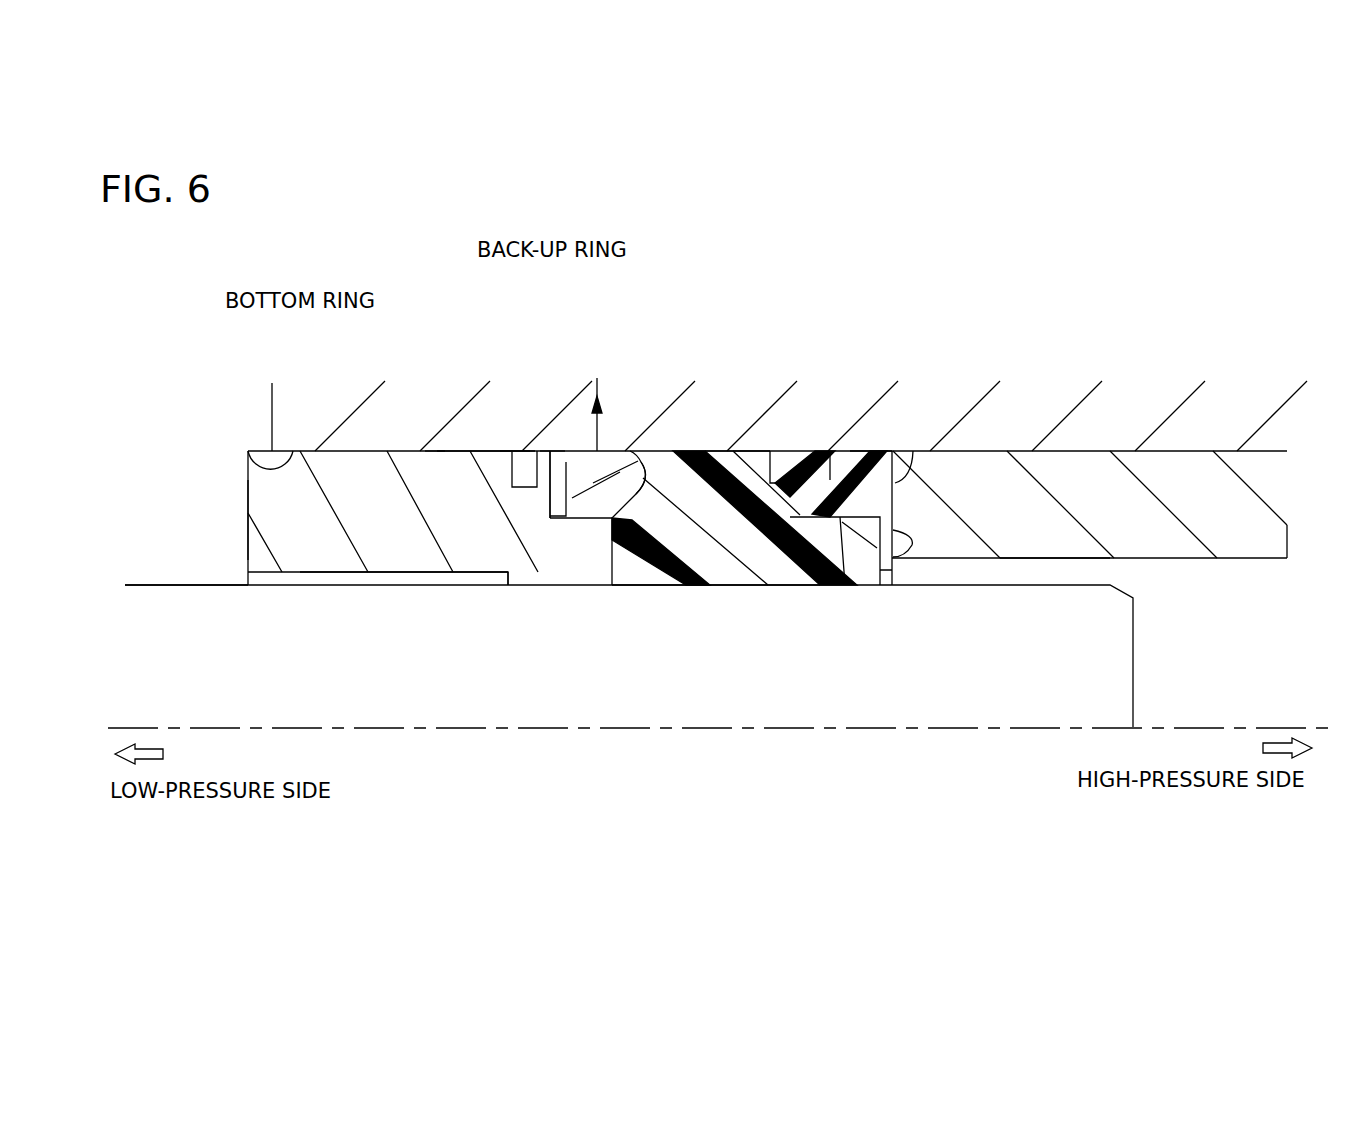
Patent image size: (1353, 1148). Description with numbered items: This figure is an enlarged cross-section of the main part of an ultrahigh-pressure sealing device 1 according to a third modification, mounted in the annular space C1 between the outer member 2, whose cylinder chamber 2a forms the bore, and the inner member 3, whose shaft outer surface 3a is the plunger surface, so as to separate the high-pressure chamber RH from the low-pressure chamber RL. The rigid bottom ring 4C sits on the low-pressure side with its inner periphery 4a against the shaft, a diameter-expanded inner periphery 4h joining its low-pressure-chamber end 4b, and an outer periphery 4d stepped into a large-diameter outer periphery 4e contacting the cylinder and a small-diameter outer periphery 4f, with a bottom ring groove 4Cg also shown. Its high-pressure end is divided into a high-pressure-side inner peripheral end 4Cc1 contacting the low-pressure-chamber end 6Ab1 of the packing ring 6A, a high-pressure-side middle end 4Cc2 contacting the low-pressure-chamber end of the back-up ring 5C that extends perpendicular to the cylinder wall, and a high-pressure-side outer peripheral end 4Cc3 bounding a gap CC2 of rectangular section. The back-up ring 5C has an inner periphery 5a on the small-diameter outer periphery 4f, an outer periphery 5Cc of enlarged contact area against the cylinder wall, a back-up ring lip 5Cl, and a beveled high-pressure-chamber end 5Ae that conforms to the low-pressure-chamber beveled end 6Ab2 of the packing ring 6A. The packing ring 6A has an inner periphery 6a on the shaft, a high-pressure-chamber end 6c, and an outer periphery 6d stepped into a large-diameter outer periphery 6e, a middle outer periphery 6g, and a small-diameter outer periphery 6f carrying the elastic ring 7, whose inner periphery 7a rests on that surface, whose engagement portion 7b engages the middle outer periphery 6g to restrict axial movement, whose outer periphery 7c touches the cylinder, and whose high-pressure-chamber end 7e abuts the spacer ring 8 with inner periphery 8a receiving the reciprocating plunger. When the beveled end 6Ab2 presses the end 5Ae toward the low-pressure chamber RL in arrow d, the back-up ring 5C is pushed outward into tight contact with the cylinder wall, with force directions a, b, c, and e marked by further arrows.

The ultrahigh-pressure sealing device 1 is at (1082, 326).
The outer member 2 is at (270, 405).
The cylinder chamber 2a is at (243, 467).
The inner member 3 is at (1135, 638).
The shaft outer surface 3a is at (147, 583).
The bottom ring 4C is at (338, 450).
The inner periphery 4a is at (523, 588).
The low-pressure-chamber end 4b is at (245, 503).
The diameter-expanded inner periphery 4h is at (423, 586).
The outer periphery 4d is at (535, 332).
The large-diameter outer periphery 4e is at (433, 451).
The bottom ring groove 4Cg is at (522, 451).
The small-diameter outer periphery 4f is at (560, 450).
The high-pressure-side inner peripheral end 4Cc1 is at (638, 588).
The high-pressure-side middle end 4Cc2 is at (552, 522).
The high-pressure-side outer peripheral end 4Cc3 is at (512, 462).
The gap CC2 is at (515, 460).
The back-up ring 5C is at (582, 448).
The back-up ring lip 5Cl is at (539, 494).
The outer periphery 5Cc is at (618, 451).
The high-pressure-chamber end 5Ae is at (662, 458).
The inner periphery 5a is at (589, 551).
The packing ring 6A is at (686, 442).
The low-pressure-chamber end 6Ab1 is at (600, 588).
The low-pressure-chamber beveled end 6Ab2 is at (623, 451).
The inner periphery 6a is at (762, 588).
The high-pressure-chamber end 6c is at (906, 588).
The outer periphery 6d is at (822, 328).
The large-diameter outer periphery 6e is at (712, 451).
The middle outer periphery 6g is at (747, 451).
The small-diameter outer periphery 6f is at (828, 451).
The elastic ring 7 is at (871, 440).
The inner periphery 7a is at (850, 588).
The engagement portion 7b is at (810, 588).
The outer periphery 7c is at (884, 451).
The high-pressure-chamber end 7e is at (910, 451).
The spacer ring 8 is at (1162, 525).
The inner periphery 8a is at (897, 533).
The annular space C1 is at (1037, 580).
The low-pressure chamber RL is at (178, 528).
The high-pressure chamber RH is at (1187, 686).
The force direction a is at (960, 510).
The force direction b is at (740, 588).
The force direction c is at (833, 451).
The arrow d is at (675, 488).
The force direction e is at (565, 588).